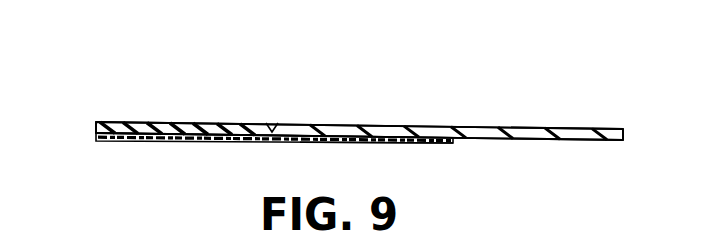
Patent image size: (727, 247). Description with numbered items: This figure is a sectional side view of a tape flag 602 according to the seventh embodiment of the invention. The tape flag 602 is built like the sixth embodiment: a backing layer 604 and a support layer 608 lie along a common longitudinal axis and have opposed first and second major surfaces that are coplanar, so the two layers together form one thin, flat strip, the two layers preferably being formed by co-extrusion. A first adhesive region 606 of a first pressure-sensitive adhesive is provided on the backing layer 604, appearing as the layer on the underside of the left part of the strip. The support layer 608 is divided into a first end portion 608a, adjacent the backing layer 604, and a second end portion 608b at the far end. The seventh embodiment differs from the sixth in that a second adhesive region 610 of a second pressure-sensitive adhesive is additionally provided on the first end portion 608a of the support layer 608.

The tape flag 602 is at (233, 83).
The backing layer 604 is at (164, 121).
The first adhesive region 606 is at (168, 143).
The support layer 608 is at (527, 141).
The first end portion 608a is at (347, 131).
The second end portion 608b is at (522, 100).
The second adhesive region 610 is at (373, 143).